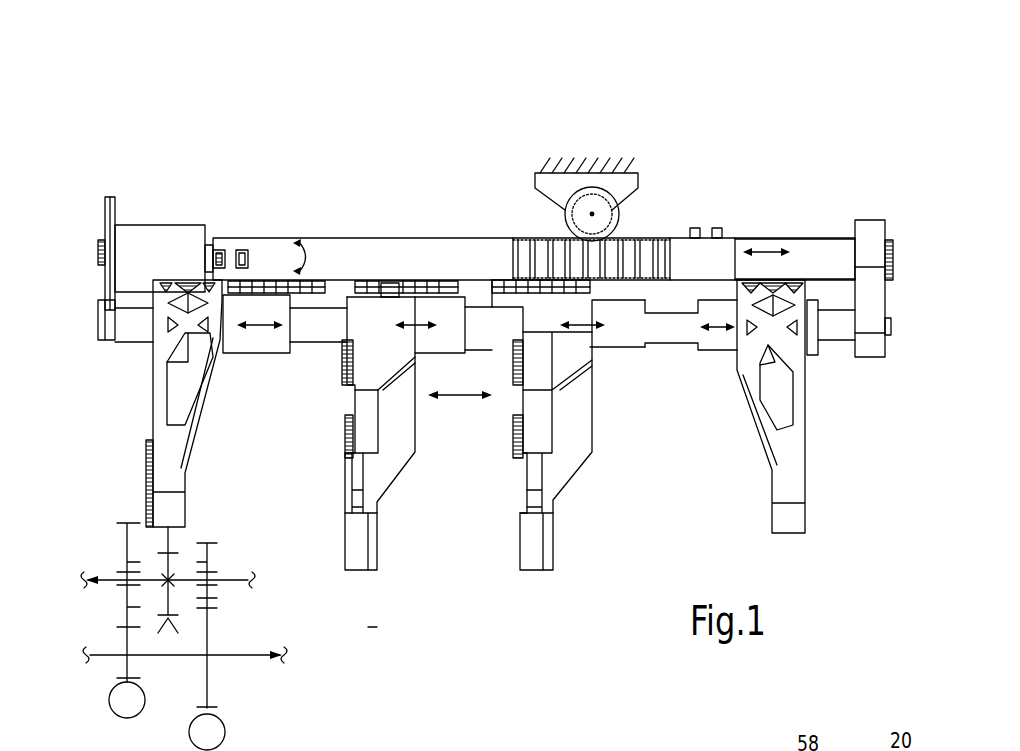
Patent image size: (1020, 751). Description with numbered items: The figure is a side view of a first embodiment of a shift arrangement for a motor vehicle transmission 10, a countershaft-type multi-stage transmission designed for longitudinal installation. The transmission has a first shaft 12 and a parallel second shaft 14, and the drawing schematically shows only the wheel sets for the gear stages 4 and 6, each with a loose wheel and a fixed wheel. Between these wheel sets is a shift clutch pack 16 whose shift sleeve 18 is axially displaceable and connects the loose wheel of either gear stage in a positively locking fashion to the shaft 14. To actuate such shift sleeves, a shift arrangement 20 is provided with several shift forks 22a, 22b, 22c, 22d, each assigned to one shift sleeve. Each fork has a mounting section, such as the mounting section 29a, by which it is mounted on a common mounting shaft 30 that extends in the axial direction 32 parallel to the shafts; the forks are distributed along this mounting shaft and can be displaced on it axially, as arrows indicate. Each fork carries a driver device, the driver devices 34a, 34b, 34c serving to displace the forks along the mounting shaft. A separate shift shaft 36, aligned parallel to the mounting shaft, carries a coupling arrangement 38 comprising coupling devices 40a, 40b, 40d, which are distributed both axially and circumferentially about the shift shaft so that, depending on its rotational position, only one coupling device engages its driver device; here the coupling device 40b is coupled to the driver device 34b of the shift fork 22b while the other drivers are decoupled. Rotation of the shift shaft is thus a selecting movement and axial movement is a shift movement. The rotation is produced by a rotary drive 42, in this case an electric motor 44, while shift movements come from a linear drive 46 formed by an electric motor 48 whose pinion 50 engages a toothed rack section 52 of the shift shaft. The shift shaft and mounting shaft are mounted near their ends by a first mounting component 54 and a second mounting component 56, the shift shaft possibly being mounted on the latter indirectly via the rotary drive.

The motor vehicle transmission 10 is at (387, 630).
The first shaft 12 is at (242, 658).
The second shaft 14 is at (230, 582).
The shift clutch pack 16 is at (140, 636).
The shift sleeve 18 is at (162, 512).
The shift arrangement 20 is at (748, 173).
The shift fork 22a is at (153, 383).
The shift fork 22b is at (397, 448).
The shift fork 22c is at (565, 490).
The shift fork 22d is at (792, 485).
The mounting section 29a is at (243, 343).
The mounting shaft 30 is at (675, 343).
The axial direction 32 is at (458, 397).
The driver device 34a is at (337, 281).
The driver device 34b is at (479, 282).
The driver device 34c is at (605, 289).
The shift shaft 36 is at (815, 252).
The coupling arrangement 38 is at (227, 242).
The coupling device 40a is at (257, 250).
The coupling device 40b is at (385, 283).
The coupling device 40d is at (707, 228).
The rotary drive 42 is at (154, 218).
The electric motor 44 is at (187, 238).
The linear drive 46 is at (605, 186).
The electric motor 48 is at (585, 208).
The pinion 50 is at (573, 190).
The toothed rack section 52 is at (664, 238).
The first mounting component 54 is at (870, 242).
The second mounting component 56 is at (102, 308).
The gear stage 4 is at (207, 646).
The gear stage 6 is at (127, 700).